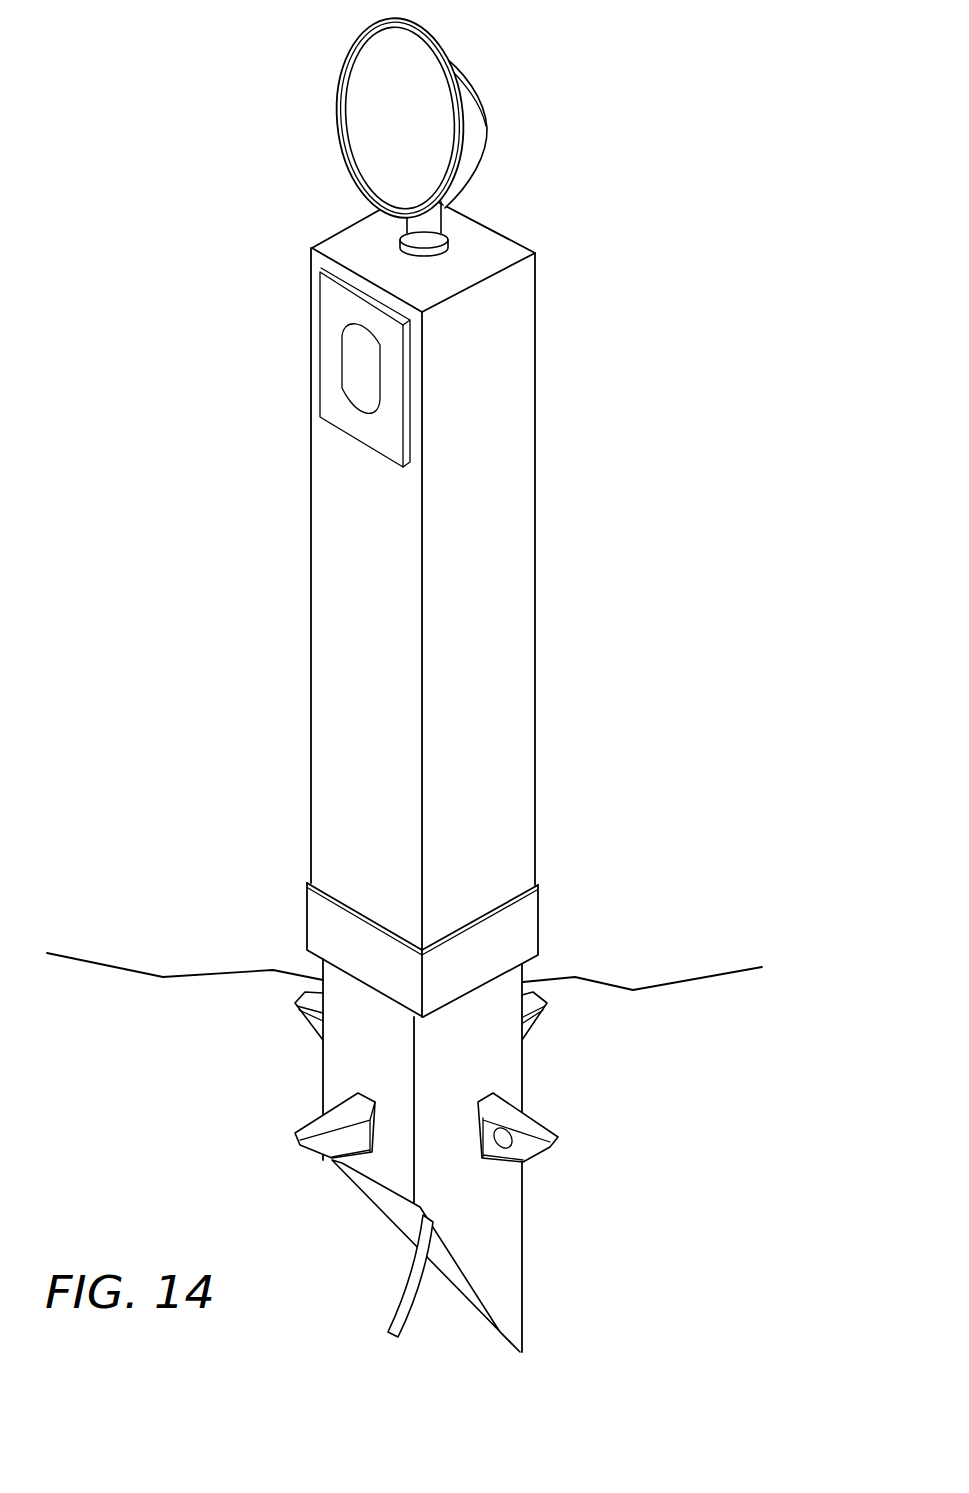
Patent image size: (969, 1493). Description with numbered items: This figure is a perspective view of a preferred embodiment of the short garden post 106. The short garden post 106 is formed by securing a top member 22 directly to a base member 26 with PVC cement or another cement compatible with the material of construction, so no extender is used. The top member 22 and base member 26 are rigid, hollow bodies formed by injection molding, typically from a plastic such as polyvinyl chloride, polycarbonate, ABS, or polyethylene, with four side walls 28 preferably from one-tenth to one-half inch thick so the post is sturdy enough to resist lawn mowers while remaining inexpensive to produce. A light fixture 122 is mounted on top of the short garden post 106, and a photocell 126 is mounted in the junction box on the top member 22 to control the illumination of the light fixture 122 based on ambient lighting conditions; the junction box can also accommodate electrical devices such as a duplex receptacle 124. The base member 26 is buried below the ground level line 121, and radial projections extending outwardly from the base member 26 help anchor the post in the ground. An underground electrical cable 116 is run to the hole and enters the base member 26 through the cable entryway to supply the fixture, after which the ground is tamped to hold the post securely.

The short garden post 106 is at (270, 543).
The top member 22 is at (523, 483).
The side walls 28 is at (490, 411).
The duplex receptacle 124 is at (330, 300).
The photocell 126 is at (357, 363).
The light fixture 122 is at (473, 107).
The base member 26 is at (502, 1067).
The underground electrical cable 116 is at (403, 1317).
The ground level line 121 is at (75, 960).